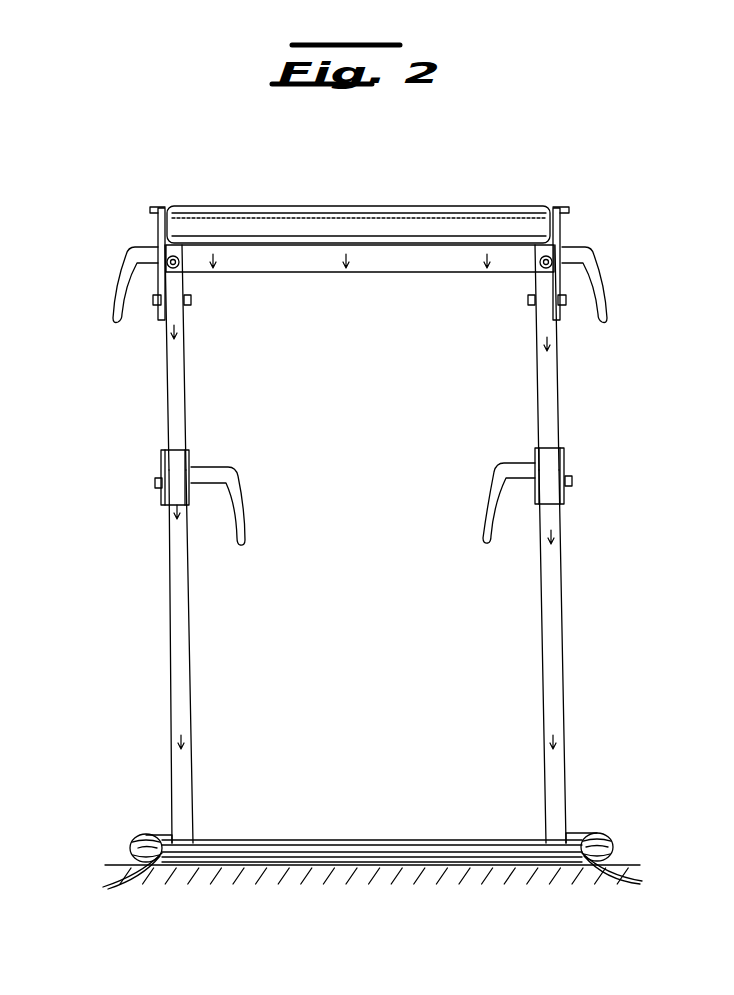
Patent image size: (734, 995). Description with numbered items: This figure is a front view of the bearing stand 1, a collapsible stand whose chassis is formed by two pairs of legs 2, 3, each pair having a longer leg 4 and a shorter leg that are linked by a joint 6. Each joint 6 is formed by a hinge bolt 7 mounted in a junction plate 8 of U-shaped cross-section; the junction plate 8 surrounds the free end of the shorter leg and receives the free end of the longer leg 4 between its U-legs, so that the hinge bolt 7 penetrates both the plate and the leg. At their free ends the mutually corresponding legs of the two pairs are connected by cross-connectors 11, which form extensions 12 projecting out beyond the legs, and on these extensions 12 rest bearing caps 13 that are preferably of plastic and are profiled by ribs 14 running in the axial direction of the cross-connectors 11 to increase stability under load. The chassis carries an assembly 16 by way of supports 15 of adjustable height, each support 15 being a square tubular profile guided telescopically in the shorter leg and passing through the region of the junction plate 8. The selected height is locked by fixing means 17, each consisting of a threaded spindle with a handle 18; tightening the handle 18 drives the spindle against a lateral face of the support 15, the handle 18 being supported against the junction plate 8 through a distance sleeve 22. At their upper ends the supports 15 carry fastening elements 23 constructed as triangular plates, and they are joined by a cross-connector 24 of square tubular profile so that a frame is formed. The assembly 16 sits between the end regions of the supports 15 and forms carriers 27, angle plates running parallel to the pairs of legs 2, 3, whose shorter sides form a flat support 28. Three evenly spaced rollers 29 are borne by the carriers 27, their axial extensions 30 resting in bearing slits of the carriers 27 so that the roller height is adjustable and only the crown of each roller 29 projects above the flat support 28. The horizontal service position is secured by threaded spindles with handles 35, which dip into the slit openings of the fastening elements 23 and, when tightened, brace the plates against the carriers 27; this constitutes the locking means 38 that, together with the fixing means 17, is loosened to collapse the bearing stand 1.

The bearing stand 1 is at (608, 205).
The pair of legs 2 is at (593, 692).
The pair of legs 3 is at (138, 690).
The leg 4 is at (178, 558).
The joint 6 is at (153, 500).
The hinge bolt 7 is at (156, 487).
The junction plate 8 is at (160, 458).
The cross-connector 11 is at (358, 840).
The extension 12 is at (160, 835).
The bearing cap 13 is at (130, 850).
The rib 14 is at (148, 866).
The support 15 is at (173, 368).
The assembly 16 is at (462, 188).
The fixing means 17 is at (262, 480).
The handle 18 is at (240, 505).
The distance sleeve 22 is at (202, 466).
The fastening element 23 is at (157, 317).
The cross-connector 24 is at (367, 255).
The carrier 27 is at (156, 220).
The flat support 28 is at (162, 208).
The roller 29 is at (345, 222).
The axial extension 30 is at (156, 228).
The handle 35 is at (125, 278).
The locking means 38 is at (100, 311).